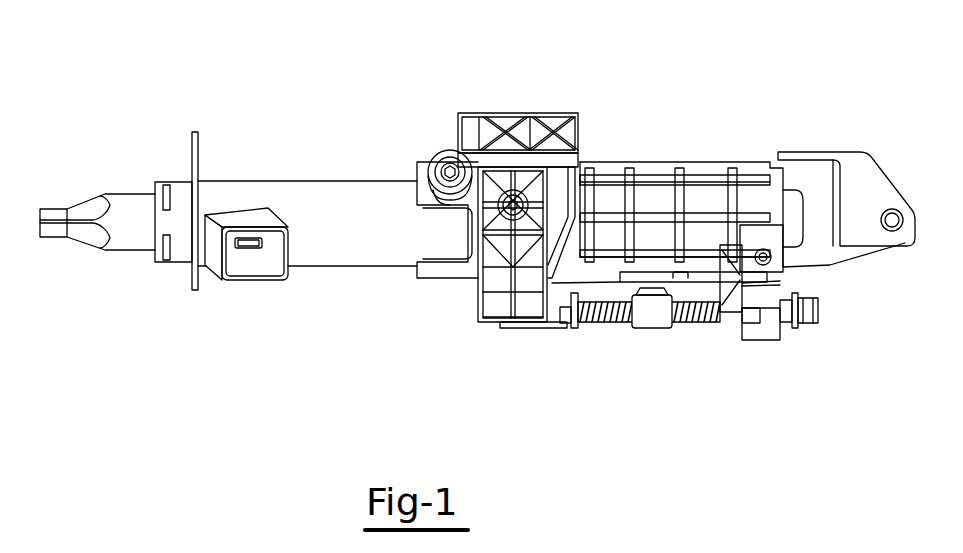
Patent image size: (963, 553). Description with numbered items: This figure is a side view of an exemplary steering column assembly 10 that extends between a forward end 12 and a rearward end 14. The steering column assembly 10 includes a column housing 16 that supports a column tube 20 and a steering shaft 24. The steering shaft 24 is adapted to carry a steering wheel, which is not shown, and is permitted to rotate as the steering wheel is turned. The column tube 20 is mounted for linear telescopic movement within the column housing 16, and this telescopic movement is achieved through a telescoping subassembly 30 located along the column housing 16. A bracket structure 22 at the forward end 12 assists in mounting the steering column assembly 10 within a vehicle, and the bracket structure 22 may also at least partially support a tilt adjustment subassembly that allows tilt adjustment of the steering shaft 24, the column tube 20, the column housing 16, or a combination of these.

The steering column assembly 10 is at (134, 78).
The forward end 12 is at (842, 150).
The rearward end 14 is at (50, 238).
The column housing 16 is at (683, 185).
The column tube 20 is at (278, 195).
The bracket structure 22 is at (505, 118).
The steering shaft 24 is at (87, 241).
The telescoping subassembly 30 is at (696, 336).